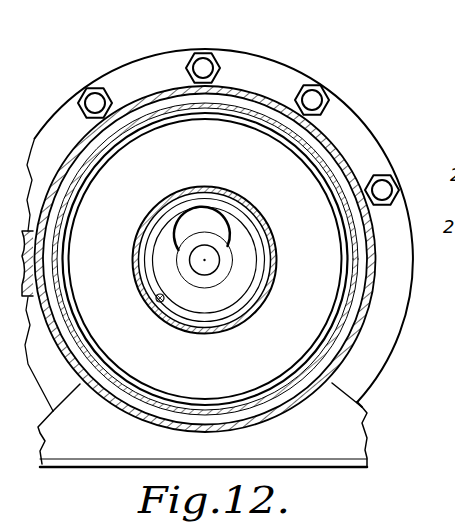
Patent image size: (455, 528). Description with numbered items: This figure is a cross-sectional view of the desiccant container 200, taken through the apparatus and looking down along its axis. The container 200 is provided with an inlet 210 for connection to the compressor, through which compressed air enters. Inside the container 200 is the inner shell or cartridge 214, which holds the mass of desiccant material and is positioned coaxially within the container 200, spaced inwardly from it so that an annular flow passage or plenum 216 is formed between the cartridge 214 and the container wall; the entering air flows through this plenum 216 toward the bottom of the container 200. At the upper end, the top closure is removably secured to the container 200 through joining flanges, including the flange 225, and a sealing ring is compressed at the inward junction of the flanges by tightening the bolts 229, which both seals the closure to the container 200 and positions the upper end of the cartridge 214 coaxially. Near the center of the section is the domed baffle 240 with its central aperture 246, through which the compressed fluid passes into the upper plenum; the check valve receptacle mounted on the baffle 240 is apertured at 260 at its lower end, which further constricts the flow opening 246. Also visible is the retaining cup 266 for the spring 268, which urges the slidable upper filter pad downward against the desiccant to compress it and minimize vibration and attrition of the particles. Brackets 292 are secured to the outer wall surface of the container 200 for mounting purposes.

The desiccant container 200 is at (136, 103).
The bolts 229 is at (209, 58).
The flange 225 is at (102, 87).
The annular flow passage or plenum 216 is at (303, 85).
The inner shell or cartridge 214 is at (322, 163).
The domed baffle 240 is at (368, 283).
The inlet 210 is at (60, 275).
The retaining cup 266 is at (181, 195).
The spring 268 is at (202, 200).
The central aperture 246 is at (221, 240).
The aperture 260 is at (238, 252).
The brackets 292 is at (372, 449).